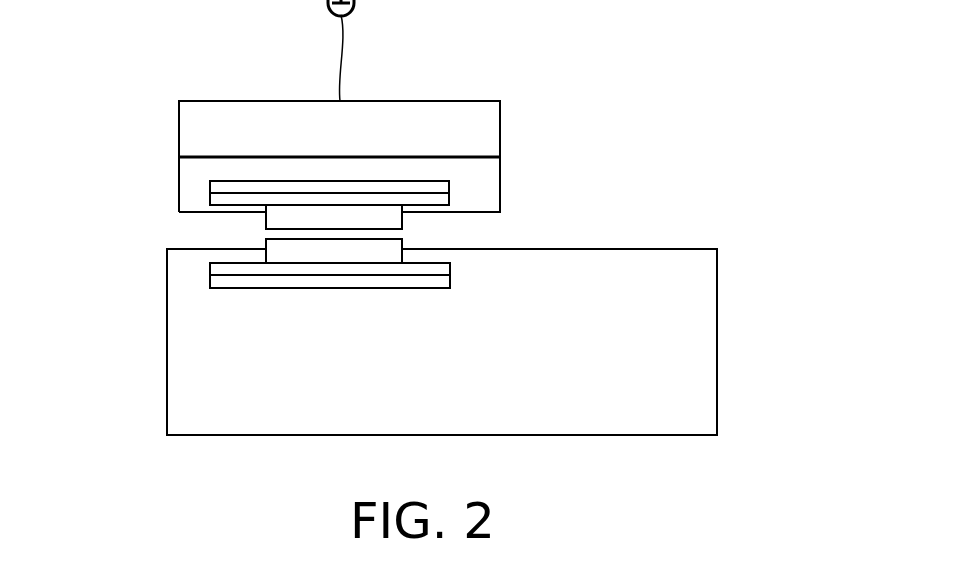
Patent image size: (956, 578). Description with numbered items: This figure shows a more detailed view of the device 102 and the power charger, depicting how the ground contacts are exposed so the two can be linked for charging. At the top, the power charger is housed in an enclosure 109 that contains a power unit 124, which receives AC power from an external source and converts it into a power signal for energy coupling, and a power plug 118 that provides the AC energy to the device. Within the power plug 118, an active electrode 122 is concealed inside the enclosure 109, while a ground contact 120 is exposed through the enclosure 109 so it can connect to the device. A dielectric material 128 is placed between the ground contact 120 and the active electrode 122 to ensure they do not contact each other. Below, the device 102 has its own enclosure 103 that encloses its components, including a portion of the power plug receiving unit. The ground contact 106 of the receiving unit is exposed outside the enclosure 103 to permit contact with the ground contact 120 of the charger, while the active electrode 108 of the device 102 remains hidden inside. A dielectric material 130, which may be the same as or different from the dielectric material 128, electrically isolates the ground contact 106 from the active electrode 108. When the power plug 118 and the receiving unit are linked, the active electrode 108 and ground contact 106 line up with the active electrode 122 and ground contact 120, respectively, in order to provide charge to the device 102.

The power plug 118 is at (267, 174).
The power unit 124 is at (339, 129).
The enclosure 109 is at (500, 120).
The active electrode 122 is at (423, 188).
The dielectric material 128 is at (417, 199).
The ground contact 120 is at (391, 218).
The ground contact 106 is at (293, 248).
The dielectric material 130 is at (245, 268).
The active electrode 108 is at (408, 282).
The device 102 is at (422, 375).
The enclosure 103 is at (210, 435).